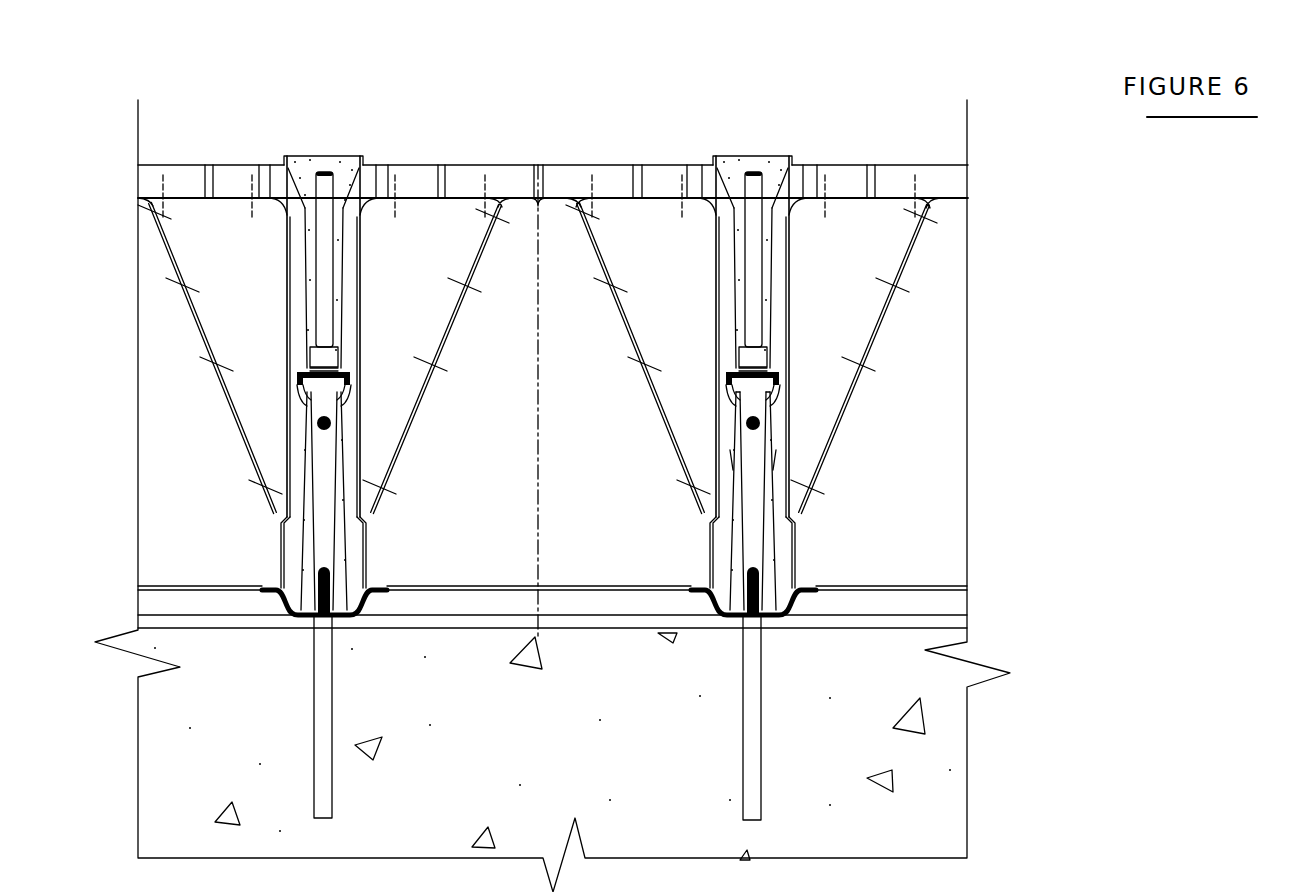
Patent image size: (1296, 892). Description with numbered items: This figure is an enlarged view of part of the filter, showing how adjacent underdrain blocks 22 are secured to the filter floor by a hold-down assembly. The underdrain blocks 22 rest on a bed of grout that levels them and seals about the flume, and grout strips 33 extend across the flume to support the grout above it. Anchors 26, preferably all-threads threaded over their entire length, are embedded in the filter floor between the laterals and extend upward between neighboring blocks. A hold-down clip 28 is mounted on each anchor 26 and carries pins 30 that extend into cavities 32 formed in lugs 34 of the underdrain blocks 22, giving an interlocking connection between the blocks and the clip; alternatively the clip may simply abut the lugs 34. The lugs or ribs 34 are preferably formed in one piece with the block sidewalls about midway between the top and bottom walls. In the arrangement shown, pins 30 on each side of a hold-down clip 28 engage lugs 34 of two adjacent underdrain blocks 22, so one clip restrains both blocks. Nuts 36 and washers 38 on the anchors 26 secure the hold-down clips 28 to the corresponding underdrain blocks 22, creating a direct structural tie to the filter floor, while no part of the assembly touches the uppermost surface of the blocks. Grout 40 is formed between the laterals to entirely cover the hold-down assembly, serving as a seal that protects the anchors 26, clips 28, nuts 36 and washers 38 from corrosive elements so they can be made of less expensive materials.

The underdrain block 22 is at (581, 163).
The anchor 26 is at (768, 238).
The hold-down clip 28 is at (907, 272).
The pin 30 is at (788, 406).
The cavity 32 is at (780, 423).
The grout strip 33 is at (882, 540).
The lug 34 is at (750, 454).
The nut 36 is at (783, 327).
The washer 38 is at (786, 341).
The grout 40 is at (331, 156).